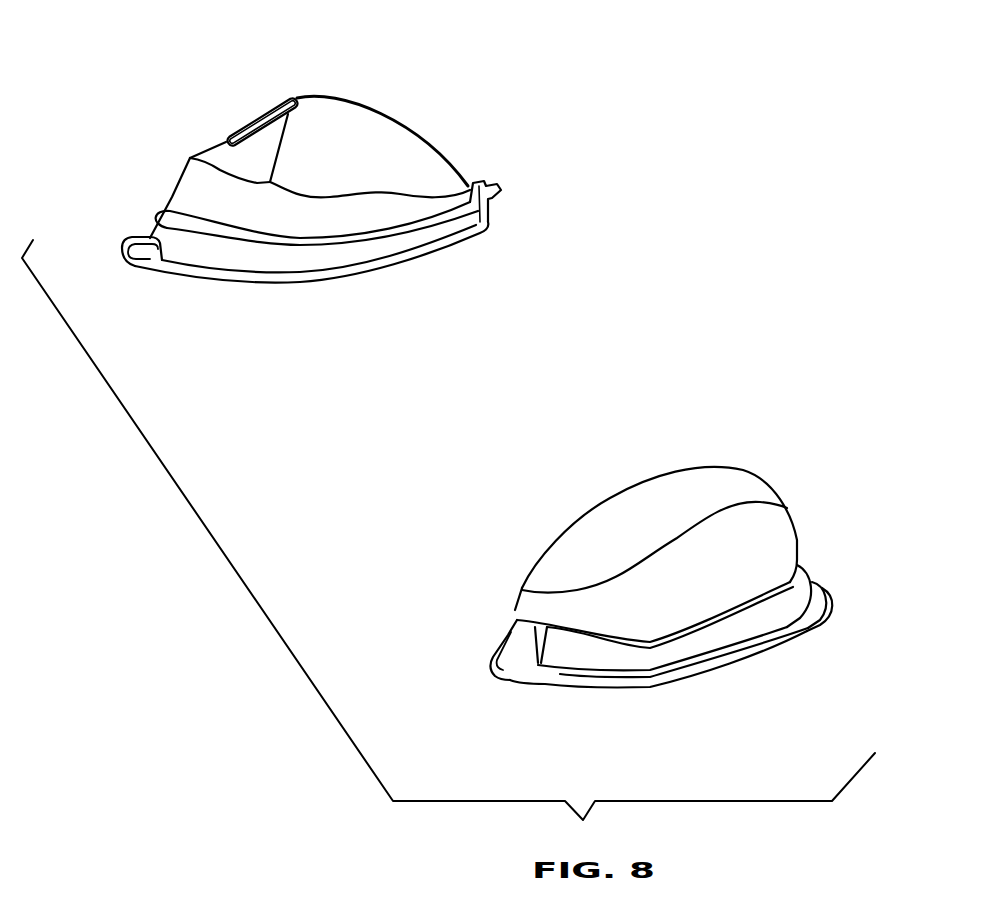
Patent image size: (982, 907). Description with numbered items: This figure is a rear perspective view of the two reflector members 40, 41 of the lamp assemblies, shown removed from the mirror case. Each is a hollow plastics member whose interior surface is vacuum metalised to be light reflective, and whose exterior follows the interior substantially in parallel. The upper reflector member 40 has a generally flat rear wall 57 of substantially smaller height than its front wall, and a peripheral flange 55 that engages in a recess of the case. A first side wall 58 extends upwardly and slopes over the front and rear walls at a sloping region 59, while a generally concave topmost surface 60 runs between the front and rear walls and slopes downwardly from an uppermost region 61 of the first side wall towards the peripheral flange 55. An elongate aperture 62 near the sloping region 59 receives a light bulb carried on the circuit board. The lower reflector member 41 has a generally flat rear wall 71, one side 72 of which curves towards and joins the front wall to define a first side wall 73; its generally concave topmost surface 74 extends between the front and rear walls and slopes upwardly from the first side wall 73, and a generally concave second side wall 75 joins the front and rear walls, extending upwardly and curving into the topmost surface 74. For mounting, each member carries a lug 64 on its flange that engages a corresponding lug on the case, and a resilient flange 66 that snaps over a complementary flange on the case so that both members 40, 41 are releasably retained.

The reflector member 40 is at (340, 258).
The reflector member 41 is at (702, 648).
The peripheral flange 55 is at (442, 227).
The rear wall 57 is at (253, 217).
The first side wall 58 is at (187, 197).
The sloping region 59 is at (217, 152).
The topmost surface 60 is at (387, 148).
The uppermost region of first side wall 61 is at (295, 96).
The aperture 62 is at (277, 113).
The lug 64 is at (122, 240).
The resilient flange 66 is at (500, 185).
The rear wall 71 is at (760, 583).
The side of rear wall 72 is at (567, 620).
The first side wall 73 is at (530, 610).
The topmost surface 74 is at (652, 517).
The second side wall 75 is at (800, 533).